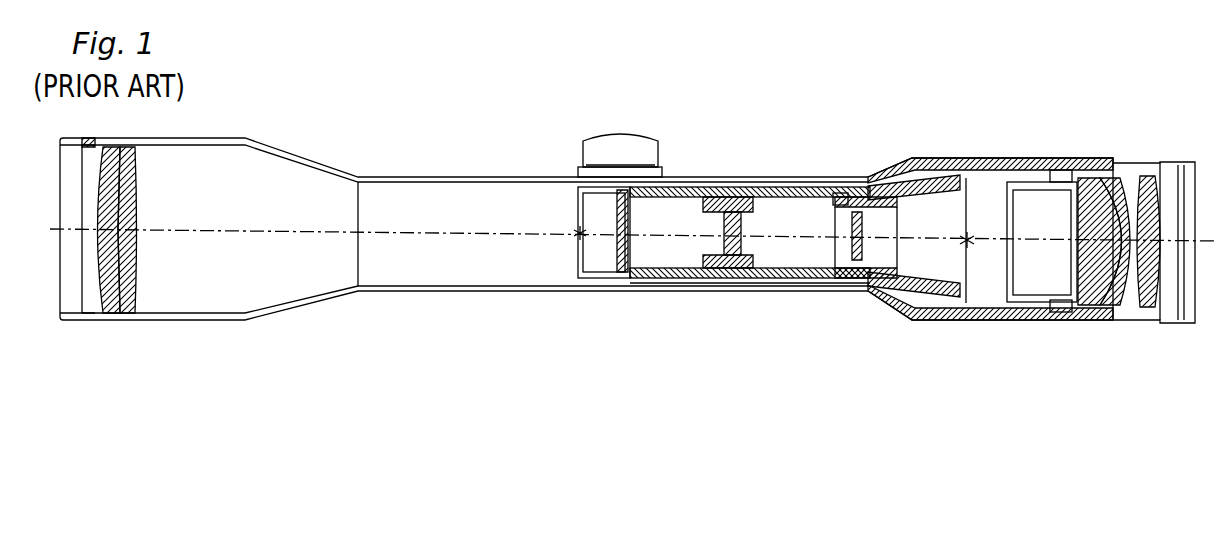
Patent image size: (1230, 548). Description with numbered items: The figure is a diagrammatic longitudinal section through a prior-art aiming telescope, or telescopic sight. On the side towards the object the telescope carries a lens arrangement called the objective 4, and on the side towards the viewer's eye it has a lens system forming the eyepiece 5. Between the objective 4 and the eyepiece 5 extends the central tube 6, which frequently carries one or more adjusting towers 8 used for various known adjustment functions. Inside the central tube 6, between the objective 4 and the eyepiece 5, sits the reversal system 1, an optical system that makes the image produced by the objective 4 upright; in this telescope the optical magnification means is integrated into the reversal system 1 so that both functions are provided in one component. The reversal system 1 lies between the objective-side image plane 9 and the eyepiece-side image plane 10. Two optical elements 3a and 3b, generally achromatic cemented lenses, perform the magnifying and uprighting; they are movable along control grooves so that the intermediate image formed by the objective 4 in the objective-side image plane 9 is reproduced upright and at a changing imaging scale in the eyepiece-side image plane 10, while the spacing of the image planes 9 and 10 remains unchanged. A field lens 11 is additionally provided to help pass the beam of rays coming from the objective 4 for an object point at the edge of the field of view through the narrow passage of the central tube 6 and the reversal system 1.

The reversal system 1 is at (780, 302).
The optical element 3a is at (743, 177).
The optical element 3b is at (868, 182).
The objective 4 is at (124, 329).
The eyepiece 5 is at (1136, 328).
The central tube 6 is at (652, 292).
The adjusting tower 8 is at (622, 137).
The objective-side image plane 9 is at (579, 243).
The eyepiece-side image plane 10 is at (968, 248).
The field lens 11 is at (617, 262).